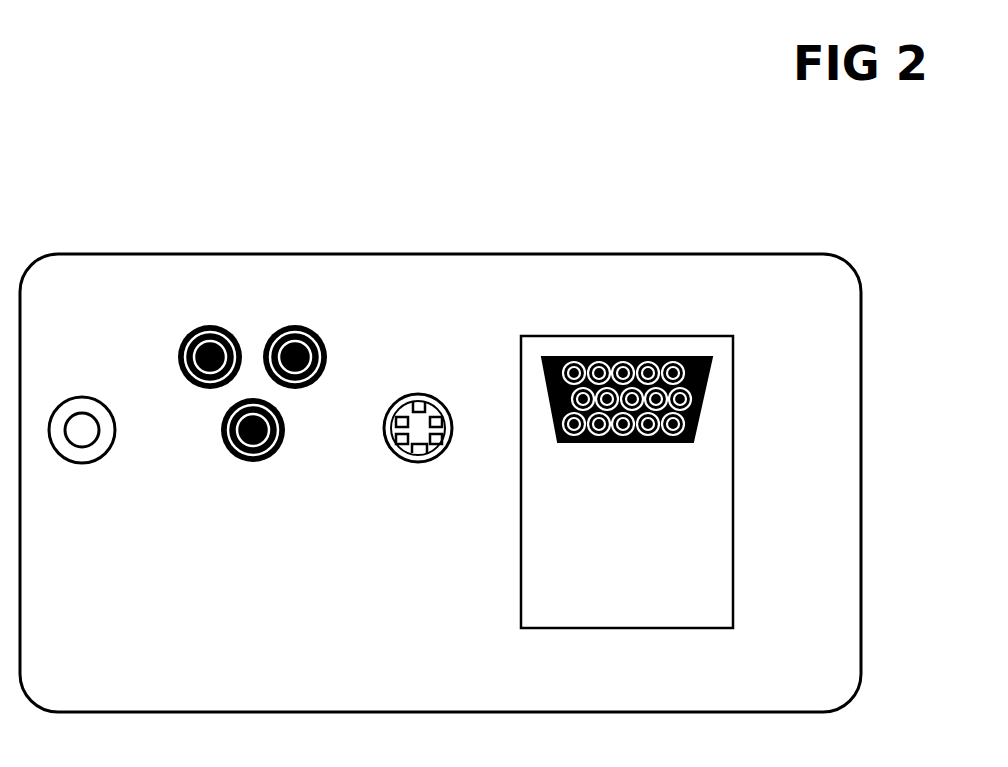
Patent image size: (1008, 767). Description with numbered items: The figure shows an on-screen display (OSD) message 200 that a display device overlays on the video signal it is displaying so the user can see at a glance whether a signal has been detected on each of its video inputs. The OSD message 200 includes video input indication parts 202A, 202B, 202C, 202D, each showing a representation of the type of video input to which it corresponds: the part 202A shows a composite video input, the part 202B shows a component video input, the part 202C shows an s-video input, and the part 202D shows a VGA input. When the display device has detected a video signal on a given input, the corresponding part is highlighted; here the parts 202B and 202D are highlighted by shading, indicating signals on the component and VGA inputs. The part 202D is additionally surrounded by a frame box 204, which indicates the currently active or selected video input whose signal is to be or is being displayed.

The on-screen display (OSD) message 200 is at (848, 292).
The video input indication part 202A is at (47, 533).
The video input indication part 202B is at (214, 533).
The video input indication part 202C is at (368, 523).
The video input indication part 202D is at (577, 615).
The frame box 204 is at (733, 472).